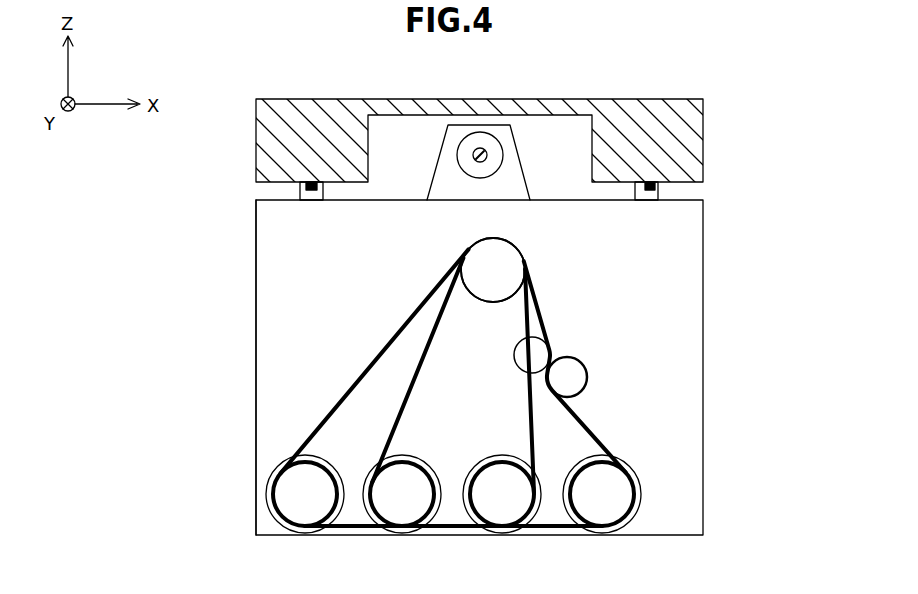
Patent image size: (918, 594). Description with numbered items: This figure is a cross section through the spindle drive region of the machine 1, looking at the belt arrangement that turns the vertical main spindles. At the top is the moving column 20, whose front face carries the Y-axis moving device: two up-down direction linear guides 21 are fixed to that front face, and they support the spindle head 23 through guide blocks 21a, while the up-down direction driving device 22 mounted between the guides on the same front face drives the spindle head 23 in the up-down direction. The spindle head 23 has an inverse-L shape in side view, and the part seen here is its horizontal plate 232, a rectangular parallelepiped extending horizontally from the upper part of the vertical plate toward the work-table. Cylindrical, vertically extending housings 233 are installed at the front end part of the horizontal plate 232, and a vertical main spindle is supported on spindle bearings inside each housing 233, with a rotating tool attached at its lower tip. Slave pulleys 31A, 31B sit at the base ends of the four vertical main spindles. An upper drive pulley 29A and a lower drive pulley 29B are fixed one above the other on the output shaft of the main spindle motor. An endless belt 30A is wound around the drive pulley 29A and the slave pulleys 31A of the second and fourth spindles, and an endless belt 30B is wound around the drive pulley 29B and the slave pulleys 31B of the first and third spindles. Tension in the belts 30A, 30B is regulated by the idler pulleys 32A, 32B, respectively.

The printer 1 is at (120, 221).
The moving column 20 is at (720, 126).
The up-down direction linear guide 21 is at (313, 183).
The guide block 21a is at (312, 199).
The up-down direction driving device 22 is at (503, 150).
The spindle head 23 is at (720, 348).
The horizontal plate 232 is at (256, 337).
The housing 233 is at (267, 494).
The drive pulley 29A is at (512, 258).
The drive pulley 29B is at (493, 270).
The endless belt 30A is at (422, 370).
The endless belt 30B is at (349, 390).
The slave pulley 31A is at (405, 517).
The slave pulley 31B is at (308, 517).
The idler pulley 32A is at (588, 378).
The idler pulley 32B is at (547, 345).